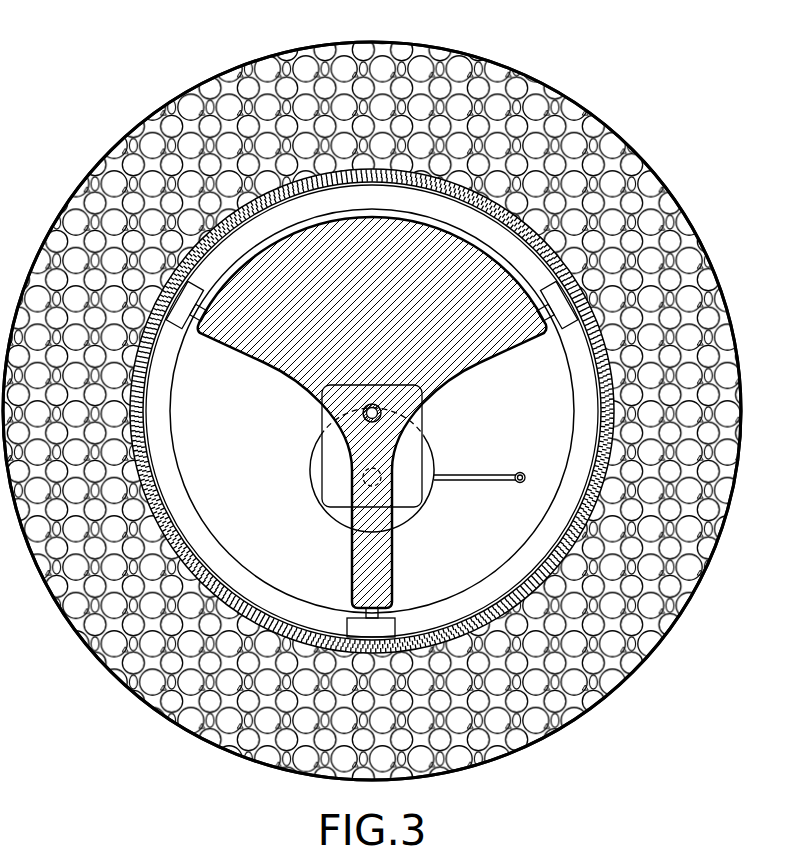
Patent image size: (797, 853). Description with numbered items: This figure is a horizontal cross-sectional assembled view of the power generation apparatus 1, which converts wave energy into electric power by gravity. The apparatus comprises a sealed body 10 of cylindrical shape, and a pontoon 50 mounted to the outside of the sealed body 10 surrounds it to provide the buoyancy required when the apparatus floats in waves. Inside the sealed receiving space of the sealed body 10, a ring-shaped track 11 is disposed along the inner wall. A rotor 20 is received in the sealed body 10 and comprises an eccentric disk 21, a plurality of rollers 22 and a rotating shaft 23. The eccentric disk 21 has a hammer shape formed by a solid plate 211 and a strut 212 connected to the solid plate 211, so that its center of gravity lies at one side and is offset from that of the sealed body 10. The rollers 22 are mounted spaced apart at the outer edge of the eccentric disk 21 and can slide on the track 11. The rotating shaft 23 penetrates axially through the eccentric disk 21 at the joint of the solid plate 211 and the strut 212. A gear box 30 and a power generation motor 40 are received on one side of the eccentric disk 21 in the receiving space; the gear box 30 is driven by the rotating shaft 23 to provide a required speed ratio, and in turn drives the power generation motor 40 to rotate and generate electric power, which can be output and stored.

The power generation apparatus 1 is at (362, 30).
The sealed body 10 is at (173, 257).
The track 11 is at (508, 240).
The rotor 20 is at (297, 225).
The eccentric disk 21 is at (524, 425).
The solid plate 211 is at (455, 348).
The strut 212 is at (448, 520).
The rollers 22 is at (583, 292).
The rotating shaft 23 is at (361, 413).
The gear box 30 is at (322, 440).
The power generation motor 40 is at (326, 510).
The pontoon 50 is at (173, 128).